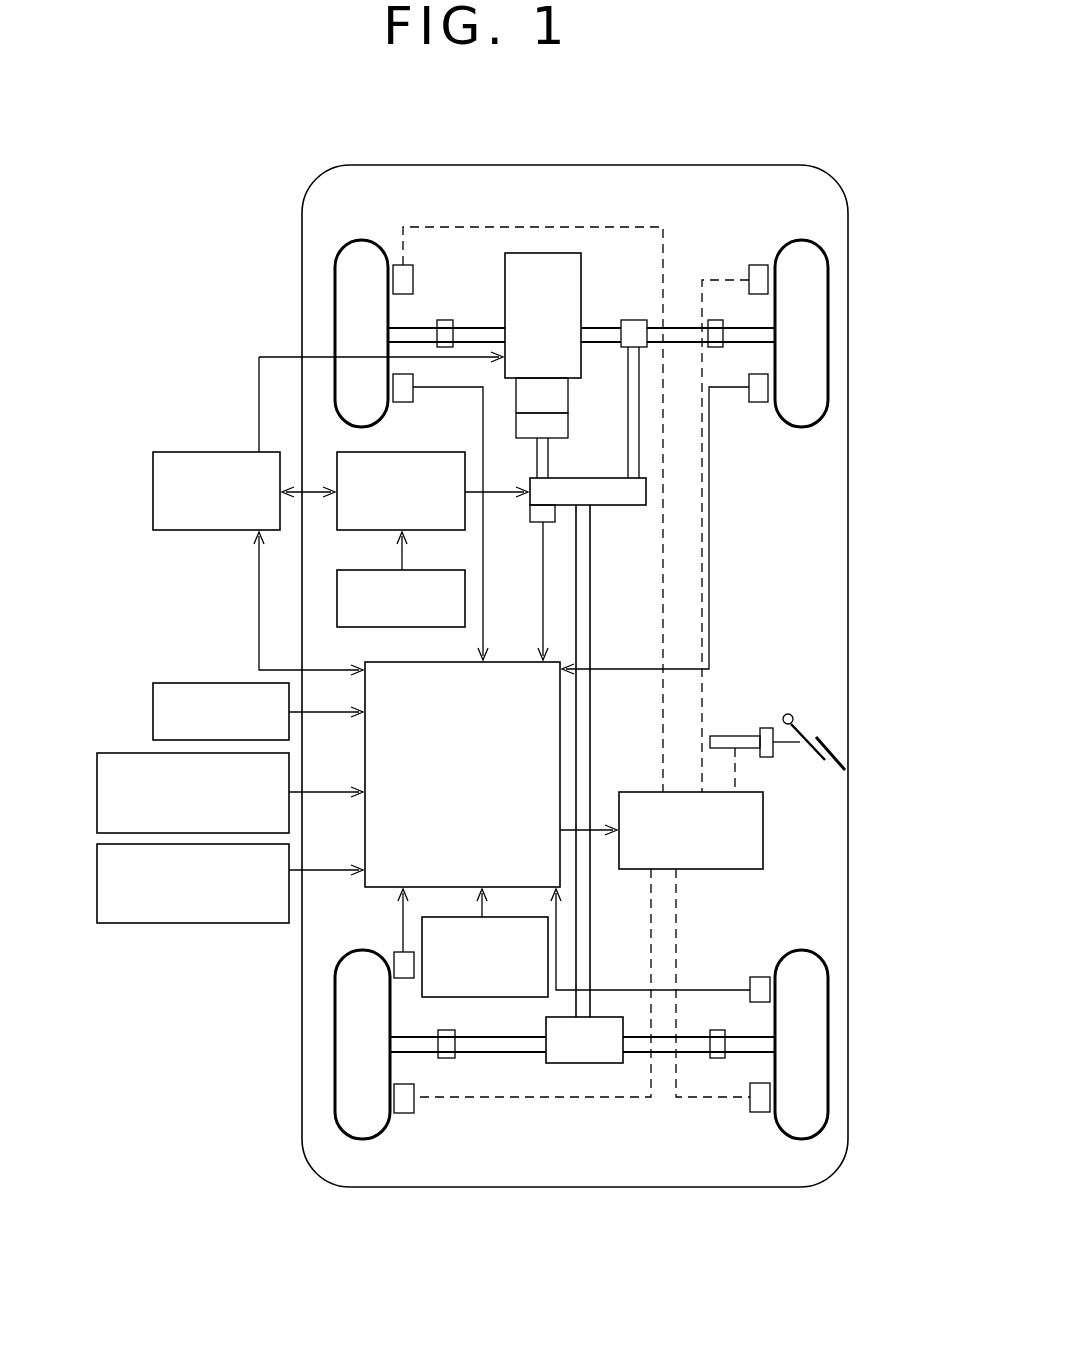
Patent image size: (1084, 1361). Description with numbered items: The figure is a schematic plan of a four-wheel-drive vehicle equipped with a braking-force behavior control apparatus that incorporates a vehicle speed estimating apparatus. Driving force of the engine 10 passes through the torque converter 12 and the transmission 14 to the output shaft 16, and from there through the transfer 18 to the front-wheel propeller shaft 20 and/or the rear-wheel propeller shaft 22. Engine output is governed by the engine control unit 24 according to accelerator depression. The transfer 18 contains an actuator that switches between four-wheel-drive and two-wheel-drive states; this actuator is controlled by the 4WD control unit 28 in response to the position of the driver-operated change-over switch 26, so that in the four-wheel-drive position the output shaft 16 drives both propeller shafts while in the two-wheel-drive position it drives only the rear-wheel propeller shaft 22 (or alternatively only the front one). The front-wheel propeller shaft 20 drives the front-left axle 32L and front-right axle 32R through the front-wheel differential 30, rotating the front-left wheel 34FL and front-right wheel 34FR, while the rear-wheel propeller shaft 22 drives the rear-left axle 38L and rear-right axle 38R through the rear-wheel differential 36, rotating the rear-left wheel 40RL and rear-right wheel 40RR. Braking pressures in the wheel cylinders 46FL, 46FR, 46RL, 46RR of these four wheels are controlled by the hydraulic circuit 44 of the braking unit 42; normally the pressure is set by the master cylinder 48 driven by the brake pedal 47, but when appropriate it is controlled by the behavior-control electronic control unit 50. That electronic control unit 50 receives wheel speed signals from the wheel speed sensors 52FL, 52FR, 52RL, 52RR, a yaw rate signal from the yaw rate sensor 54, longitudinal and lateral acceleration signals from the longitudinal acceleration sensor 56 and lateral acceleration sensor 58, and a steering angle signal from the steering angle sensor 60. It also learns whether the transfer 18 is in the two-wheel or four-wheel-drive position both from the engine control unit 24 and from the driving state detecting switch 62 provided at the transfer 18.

The engine 10 is at (562, 304).
The torque converter 12 is at (545, 395).
The transmission 14 is at (555, 432).
The output shaft 16 is at (548, 462).
The transfer 18 is at (623, 505).
The front-wheel propeller shaft 20 is at (638, 413).
The rear-wheel propeller shaft 22 is at (583, 757).
The engine control unit 24 is at (190, 452).
The change-over switch 26 is at (405, 627).
The 4WD control unit 28 is at (345, 530).
The front-wheel differential 30 is at (632, 330).
The front-left axle 32L is at (468, 335).
The front-right axle 32R is at (688, 335).
The front-left wheel 34FL is at (335, 312).
The front-right wheel 34FR is at (828, 350).
The rear-wheel differential 36 is at (583, 1063).
The rear-left axle 38L is at (497, 1052).
The rear-right axle 38R is at (693, 1052).
The rear-left wheel 40RL is at (335, 1056).
The rear-right wheel 40RR is at (828, 1085).
The braking unit 42 is at (777, 852).
The hydraulic circuit 44 is at (745, 869).
The front-left wheel cylinder 46FL is at (403, 278).
The front-right wheel cylinder 46FR is at (758, 280).
The rear-left wheel cylinder 46RL is at (408, 1113).
The rear-right wheel cylinder 46RR is at (765, 1112).
The brake pedal 47 is at (822, 742).
The master cylinder 48 is at (735, 728).
The behavior-control electronic control unit 50 is at (480, 850).
The front-left wheel speed sensor 52FL is at (405, 398).
The front-right wheel speed sensor 52FR is at (758, 402).
The rear-left wheel speed sensor 52RL is at (398, 960).
The rear-right wheel speed sensor 52RR is at (758, 985).
The yaw rate sensor 54 is at (200, 683).
The longitudinal acceleration sensor 56 is at (118, 753).
The lateral acceleration sensor 58 is at (118, 923).
The steering angle sensor 60 is at (463, 997).
The driving state detecting switch 62 is at (530, 515).